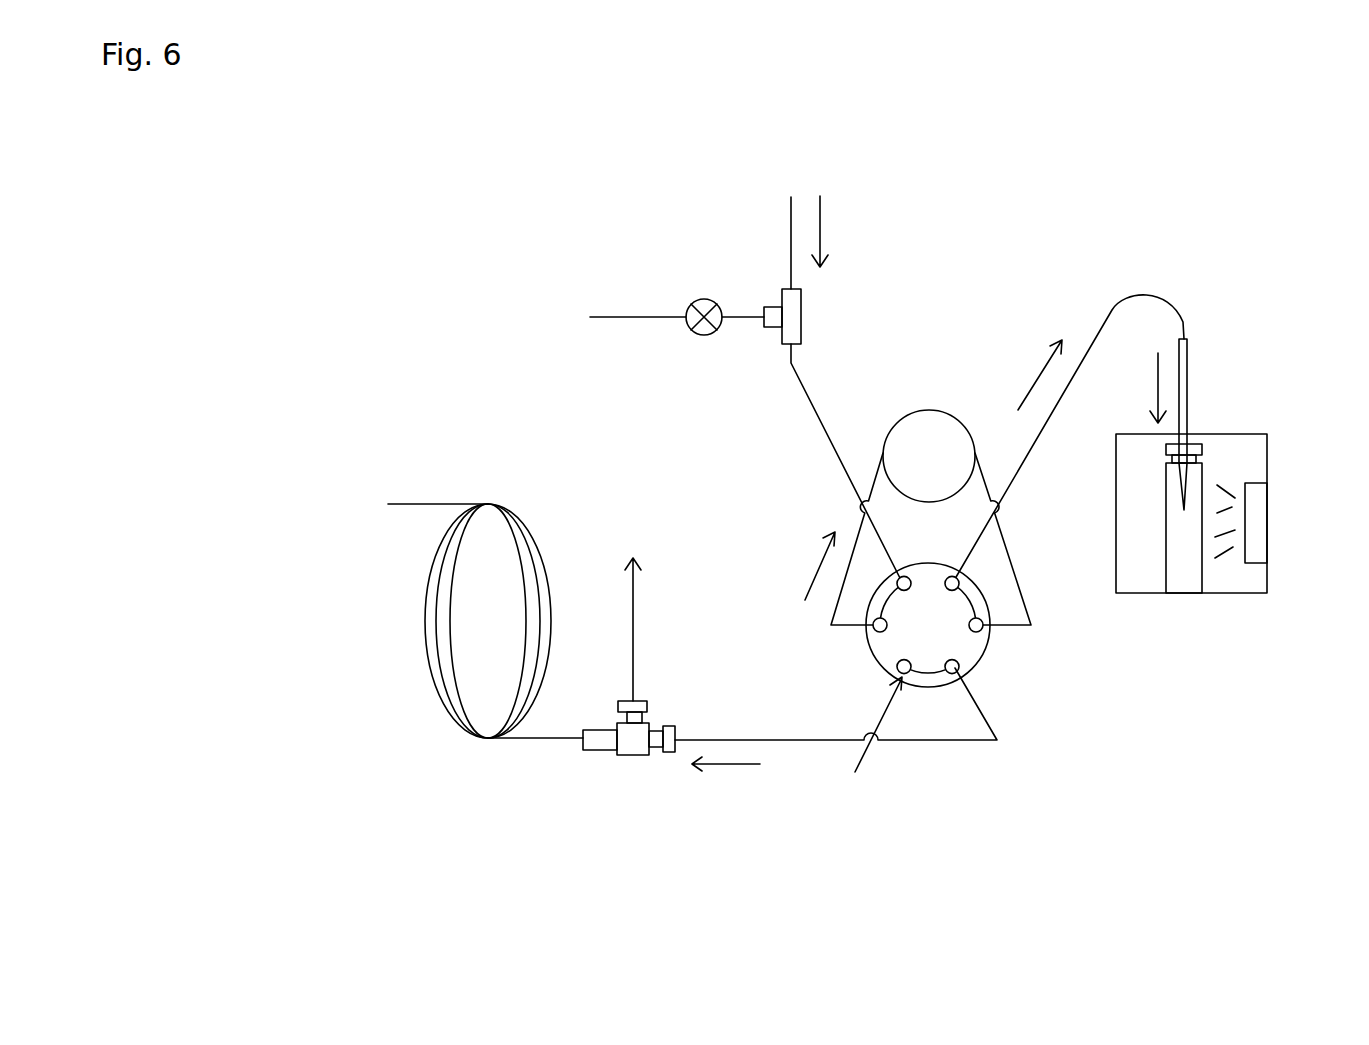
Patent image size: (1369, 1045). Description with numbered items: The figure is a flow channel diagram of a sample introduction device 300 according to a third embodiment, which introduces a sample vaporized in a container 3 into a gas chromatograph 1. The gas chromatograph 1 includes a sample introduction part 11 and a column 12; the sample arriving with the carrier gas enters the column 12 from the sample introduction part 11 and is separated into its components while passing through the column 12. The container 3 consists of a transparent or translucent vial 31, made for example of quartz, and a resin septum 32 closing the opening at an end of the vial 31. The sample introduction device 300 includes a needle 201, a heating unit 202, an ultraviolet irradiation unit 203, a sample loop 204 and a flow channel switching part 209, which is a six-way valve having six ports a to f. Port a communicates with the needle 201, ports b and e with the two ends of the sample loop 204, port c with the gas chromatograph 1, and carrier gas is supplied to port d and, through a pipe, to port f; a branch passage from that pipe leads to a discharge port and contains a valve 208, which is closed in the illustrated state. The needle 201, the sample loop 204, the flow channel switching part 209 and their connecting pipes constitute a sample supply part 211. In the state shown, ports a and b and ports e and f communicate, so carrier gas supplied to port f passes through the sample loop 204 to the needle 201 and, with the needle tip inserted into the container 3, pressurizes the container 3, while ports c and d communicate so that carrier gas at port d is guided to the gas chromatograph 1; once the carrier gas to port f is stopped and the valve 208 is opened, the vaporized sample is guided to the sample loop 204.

The gas chromatograph 1 is at (534, 666).
The sample introduction part 11 is at (637, 756).
The column 12 is at (488, 503).
The container 3 is at (1127, 518).
The vial 31 is at (1170, 550).
The septum 32 is at (1166, 450).
The needle 201 is at (1187, 355).
The heating unit 202 is at (1240, 434).
The ultraviolet irradiation unit 203 is at (1267, 520).
The sample loop 204 is at (929, 410).
The valve 208 is at (704, 335).
The flow channel switching part 209 is at (872, 660).
The sample supply part 211 is at (1003, 825).
The sample introduction device 300 is at (978, 527).